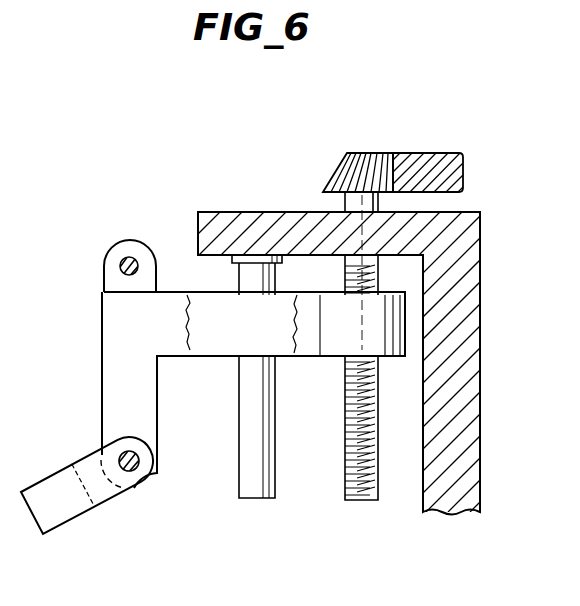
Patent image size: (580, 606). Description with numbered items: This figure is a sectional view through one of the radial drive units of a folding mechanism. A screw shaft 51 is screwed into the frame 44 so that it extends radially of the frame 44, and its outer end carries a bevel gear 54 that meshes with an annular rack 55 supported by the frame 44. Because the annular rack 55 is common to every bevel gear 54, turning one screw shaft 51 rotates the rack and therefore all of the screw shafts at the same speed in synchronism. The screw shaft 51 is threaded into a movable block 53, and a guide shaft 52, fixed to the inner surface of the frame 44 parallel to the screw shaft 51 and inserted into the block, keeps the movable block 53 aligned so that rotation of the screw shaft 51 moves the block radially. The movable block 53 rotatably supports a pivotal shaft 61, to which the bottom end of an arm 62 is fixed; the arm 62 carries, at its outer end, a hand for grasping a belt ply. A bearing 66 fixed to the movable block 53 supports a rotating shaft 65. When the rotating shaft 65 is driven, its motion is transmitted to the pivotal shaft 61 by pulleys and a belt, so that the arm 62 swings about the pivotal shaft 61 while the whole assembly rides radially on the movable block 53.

The frame 44 is at (470, 390).
The screw shaft 51 is at (340, 442).
The guide shaft 52 is at (238, 458).
The movable block 53 is at (110, 338).
The bevel gear 54 is at (336, 177).
The annular rack 55 is at (421, 153).
The pivotal shaft 61 is at (134, 470).
The arm 62 is at (55, 480).
The rotating shaft 65 is at (120, 264).
The bearing 66 is at (132, 242).